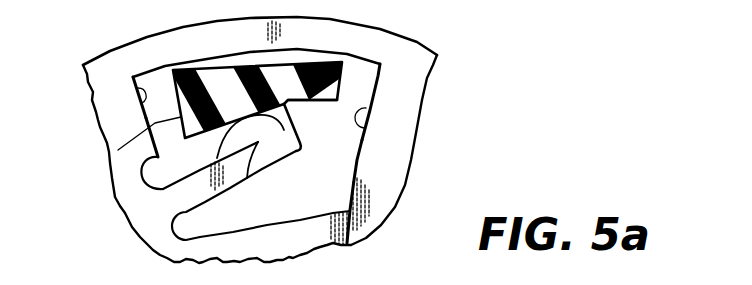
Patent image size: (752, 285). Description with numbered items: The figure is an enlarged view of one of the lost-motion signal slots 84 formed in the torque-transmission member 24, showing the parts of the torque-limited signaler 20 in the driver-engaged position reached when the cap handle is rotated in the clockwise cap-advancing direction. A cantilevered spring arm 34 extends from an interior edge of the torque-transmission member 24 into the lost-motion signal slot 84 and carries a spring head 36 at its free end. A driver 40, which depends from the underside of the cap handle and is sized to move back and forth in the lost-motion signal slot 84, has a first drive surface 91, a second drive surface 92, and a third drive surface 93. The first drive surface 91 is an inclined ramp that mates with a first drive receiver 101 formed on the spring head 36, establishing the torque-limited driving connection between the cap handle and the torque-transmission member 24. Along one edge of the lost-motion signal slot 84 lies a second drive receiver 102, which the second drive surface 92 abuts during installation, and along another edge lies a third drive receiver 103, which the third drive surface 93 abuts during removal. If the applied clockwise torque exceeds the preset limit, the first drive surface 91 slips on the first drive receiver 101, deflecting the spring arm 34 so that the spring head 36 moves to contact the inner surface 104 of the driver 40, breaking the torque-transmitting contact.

The torque-limited signaler 20 is at (346, 138).
The torque-transmission member 24 is at (94, 54).
The driver 40 is at (184, 72).
The third drive receiver 103 is at (134, 93).
The third drive surface 93 is at (152, 143).
The first drive receiver 101 is at (213, 143).
The inner surface 104 is at (348, 244).
The spring head 36 is at (306, 139).
The spring arm 34 is at (206, 206).
The first drive surface 91 is at (289, 103).
The second drive surface 92 is at (340, 88).
The second drive receiver 102 is at (348, 116).
The lost-motion signal slot 84 is at (351, 245).